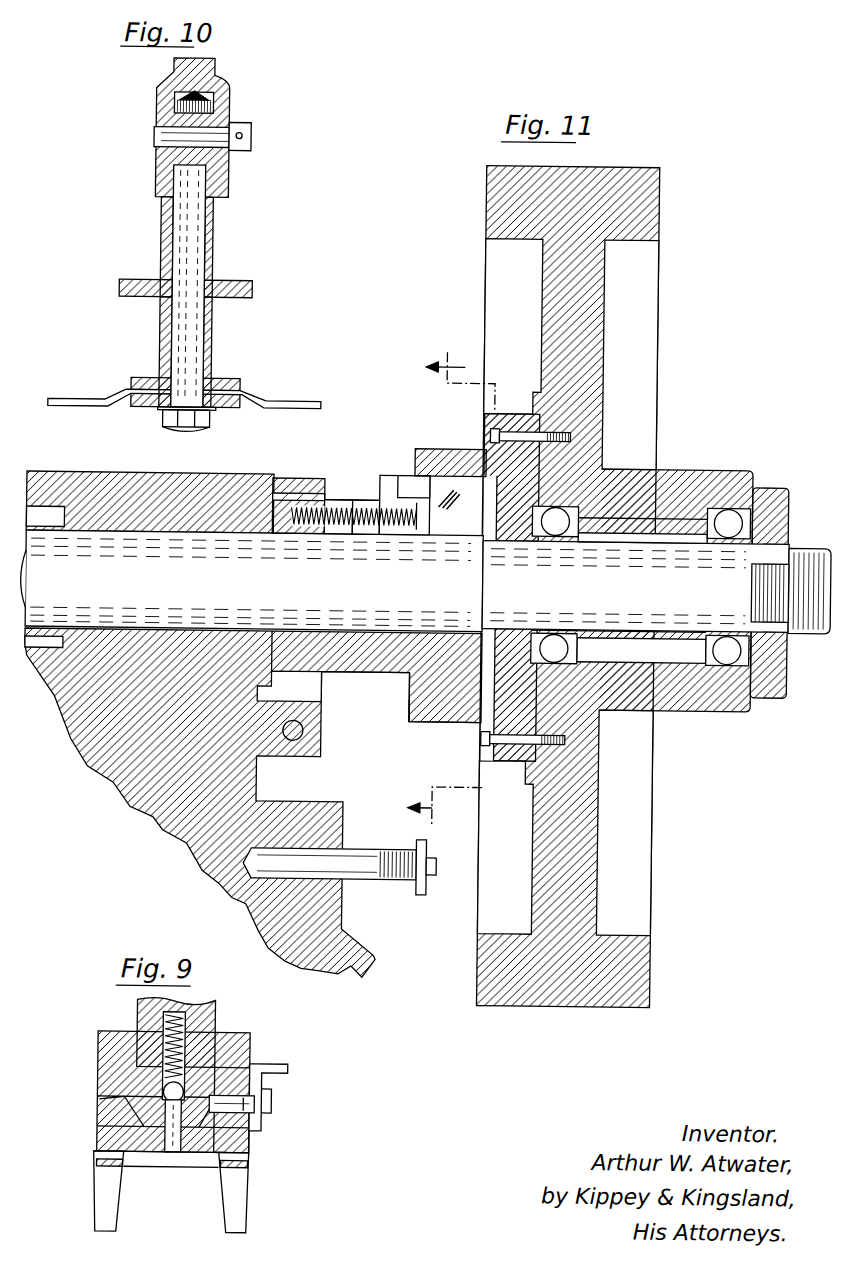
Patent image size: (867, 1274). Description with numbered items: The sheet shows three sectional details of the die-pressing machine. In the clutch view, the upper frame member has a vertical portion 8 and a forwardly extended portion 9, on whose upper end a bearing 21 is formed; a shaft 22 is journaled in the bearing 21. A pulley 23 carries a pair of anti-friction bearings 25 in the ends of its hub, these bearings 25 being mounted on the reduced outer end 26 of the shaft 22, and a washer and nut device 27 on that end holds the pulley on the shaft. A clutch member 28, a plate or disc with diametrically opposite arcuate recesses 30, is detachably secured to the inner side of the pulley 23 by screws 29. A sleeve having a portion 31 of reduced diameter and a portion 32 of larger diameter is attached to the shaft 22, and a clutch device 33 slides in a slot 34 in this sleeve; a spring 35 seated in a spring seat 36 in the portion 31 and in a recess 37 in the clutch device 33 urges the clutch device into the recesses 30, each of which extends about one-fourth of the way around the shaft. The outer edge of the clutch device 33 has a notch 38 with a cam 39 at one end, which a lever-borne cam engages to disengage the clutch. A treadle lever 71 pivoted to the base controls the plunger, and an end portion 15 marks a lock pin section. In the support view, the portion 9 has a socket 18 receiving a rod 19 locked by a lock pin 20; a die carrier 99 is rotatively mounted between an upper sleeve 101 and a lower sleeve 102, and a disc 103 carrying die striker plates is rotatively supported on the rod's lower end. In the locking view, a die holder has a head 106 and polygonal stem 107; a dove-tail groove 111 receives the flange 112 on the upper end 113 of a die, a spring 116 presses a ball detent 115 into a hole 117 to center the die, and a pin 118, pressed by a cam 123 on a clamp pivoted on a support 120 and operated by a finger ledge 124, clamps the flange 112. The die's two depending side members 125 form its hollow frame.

In FIG. 11, the vertical portion 8 is at (373, 962).
In FIG. 10, the forwardly extended portion 9 is at (214, 66).
In FIG. 11, the end portion 15 is at (452, 589).
In FIG. 10, the socket 18 is at (229, 109).
In FIG. 10, the rod 19 is at (200, 262).
In FIG. 10, the lock pin 20 is at (250, 135).
In FIG. 11, the bearing 21 is at (118, 479).
In FIG. 11, the shaft 22 is at (194, 560).
In FIG. 11, the pulley 23 is at (642, 193).
In FIG. 11, the anti-friction bearings 25 is at (559, 667).
In FIG. 11, the reduced outer end 26 is at (727, 560).
In FIG. 11, the washer and nut device 27 is at (691, 473).
In FIG. 11, the clutch member 28 is at (505, 412).
In FIG. 11, the screws 29 is at (572, 429).
In FIG. 11, the arcuate recesses 30 is at (458, 722).
In FIG. 11, the sleeve portion of reduced diameter 31 is at (371, 660).
In FIG. 11, the sleeve portion of larger diameter 32 is at (442, 460).
In FIG. 11, the clutch device 33 is at (380, 477).
In FIG. 11, the slot 34 is at (350, 500).
In FIG. 11, the spring 35 is at (332, 503).
In FIG. 11, the spring seat 36 is at (283, 480).
In FIG. 11, the recess 37 is at (418, 516).
In FIG. 11, the notch 38 is at (432, 488).
In FIG. 11, the cam 39 is at (400, 488).
In FIG. 11, the treadle lever 71 is at (370, 880).
In FIG. 10, the die carrier 99 is at (254, 286).
In FIG. 10, the upper sleeve 101 is at (214, 232).
In FIG. 10, the lower sleeve 102 is at (214, 342).
In FIG. 10, the disc 103 is at (243, 381).
In FIG. 9, the head 106 is at (108, 1048).
In FIG. 10, the polygonal stem 107 is at (68, 400).
In FIG. 9, the polygonal stem 107 is at (213, 1012).
In FIG. 9, the dove-tail groove 111 is at (142, 1122).
In FIG. 9, the flange 112 is at (135, 1107).
In FIG. 9, the upper end 113 is at (251, 1140).
In FIG. 9, the ball detent 115 is at (170, 1094).
In FIG. 9, the spring 116 is at (160, 1025).
In FIG. 9, the hole 117 is at (176, 1152).
In FIG. 9, the pin 118 is at (255, 1110).
In FIG. 9, the support 120 is at (272, 1106).
In FIG. 9, the cam 123 is at (247, 1100).
In FIG. 9, the finger ledge 124 is at (282, 1065).
In FIG. 9, the side members 125 is at (240, 1200).